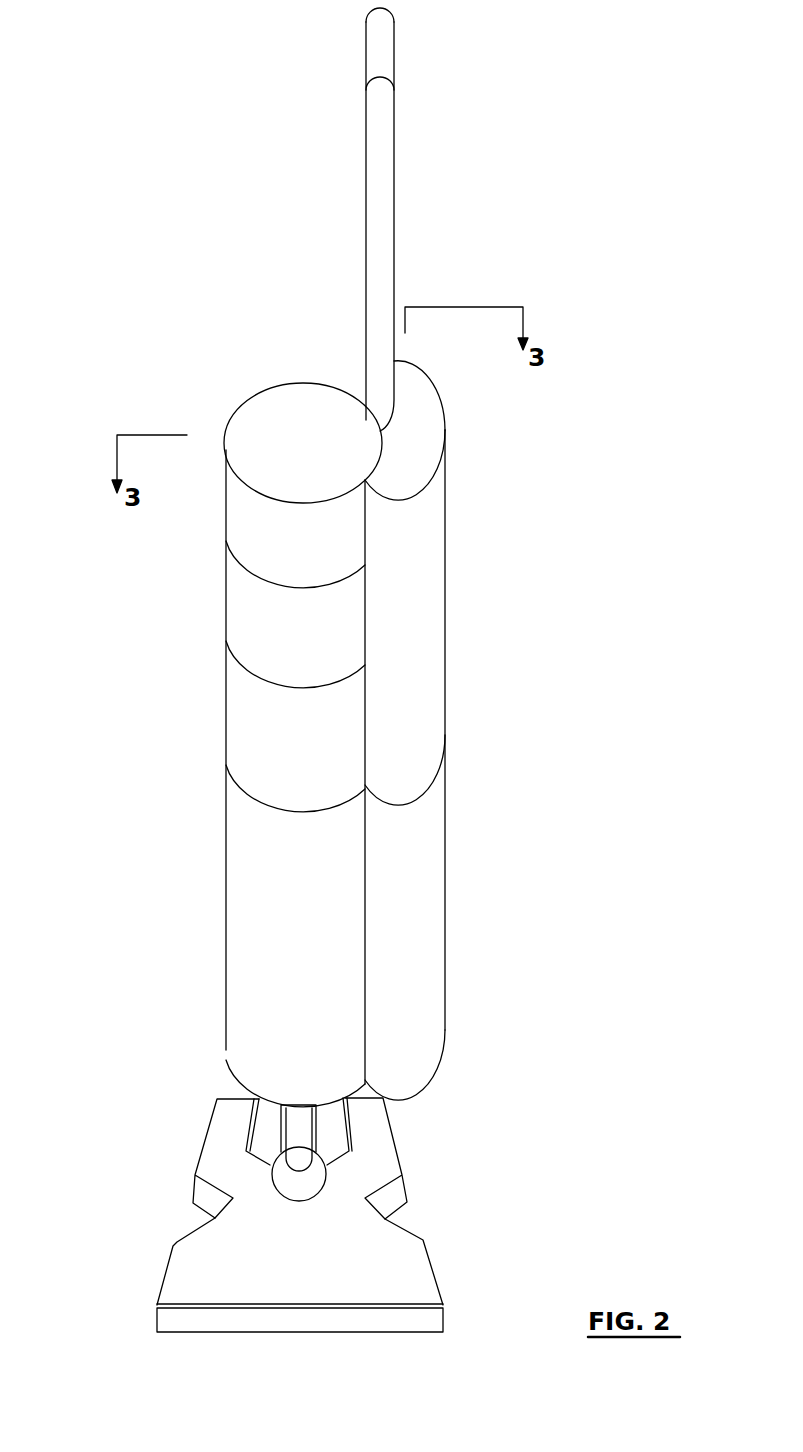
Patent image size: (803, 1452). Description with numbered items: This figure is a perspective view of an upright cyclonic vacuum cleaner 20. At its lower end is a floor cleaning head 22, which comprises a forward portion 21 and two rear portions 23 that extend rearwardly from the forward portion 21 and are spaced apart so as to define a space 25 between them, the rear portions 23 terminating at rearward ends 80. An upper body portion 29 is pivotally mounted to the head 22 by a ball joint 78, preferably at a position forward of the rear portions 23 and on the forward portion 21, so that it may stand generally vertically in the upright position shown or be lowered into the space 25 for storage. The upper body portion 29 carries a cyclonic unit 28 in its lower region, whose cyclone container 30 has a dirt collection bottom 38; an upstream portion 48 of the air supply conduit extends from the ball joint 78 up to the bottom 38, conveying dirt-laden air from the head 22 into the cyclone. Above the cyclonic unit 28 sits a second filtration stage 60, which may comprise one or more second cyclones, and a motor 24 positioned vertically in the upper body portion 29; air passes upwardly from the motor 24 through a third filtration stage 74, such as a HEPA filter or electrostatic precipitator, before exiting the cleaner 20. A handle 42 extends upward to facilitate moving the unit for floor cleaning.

The upright cyclonic vacuum cleaner 20 is at (530, 693).
The forward portion 21 is at (387, 1272).
The floor cleaning head 22 is at (170, 1318).
The rear portions 23 is at (228, 1145).
The motor 24 is at (245, 620).
The space 25 is at (328, 1130).
The cyclonic unit 28 is at (270, 955).
The upper body portion 29 is at (122, 836).
The cyclone container 30 is at (255, 838).
The bottom 38 is at (227, 1060).
The handle 42 is at (372, 130).
The upstream portion 48 is at (262, 1101).
The second filtration stage 60 is at (245, 718).
The third filtration stage 74 is at (247, 517).
The ball joint 78 is at (313, 1186).
The rearward ends 80 is at (256, 1130).